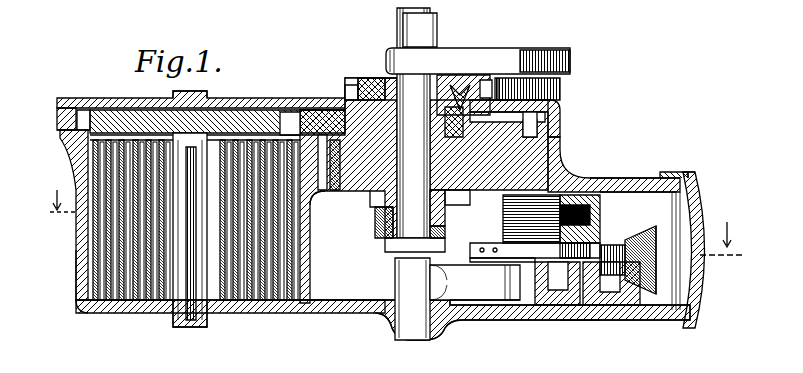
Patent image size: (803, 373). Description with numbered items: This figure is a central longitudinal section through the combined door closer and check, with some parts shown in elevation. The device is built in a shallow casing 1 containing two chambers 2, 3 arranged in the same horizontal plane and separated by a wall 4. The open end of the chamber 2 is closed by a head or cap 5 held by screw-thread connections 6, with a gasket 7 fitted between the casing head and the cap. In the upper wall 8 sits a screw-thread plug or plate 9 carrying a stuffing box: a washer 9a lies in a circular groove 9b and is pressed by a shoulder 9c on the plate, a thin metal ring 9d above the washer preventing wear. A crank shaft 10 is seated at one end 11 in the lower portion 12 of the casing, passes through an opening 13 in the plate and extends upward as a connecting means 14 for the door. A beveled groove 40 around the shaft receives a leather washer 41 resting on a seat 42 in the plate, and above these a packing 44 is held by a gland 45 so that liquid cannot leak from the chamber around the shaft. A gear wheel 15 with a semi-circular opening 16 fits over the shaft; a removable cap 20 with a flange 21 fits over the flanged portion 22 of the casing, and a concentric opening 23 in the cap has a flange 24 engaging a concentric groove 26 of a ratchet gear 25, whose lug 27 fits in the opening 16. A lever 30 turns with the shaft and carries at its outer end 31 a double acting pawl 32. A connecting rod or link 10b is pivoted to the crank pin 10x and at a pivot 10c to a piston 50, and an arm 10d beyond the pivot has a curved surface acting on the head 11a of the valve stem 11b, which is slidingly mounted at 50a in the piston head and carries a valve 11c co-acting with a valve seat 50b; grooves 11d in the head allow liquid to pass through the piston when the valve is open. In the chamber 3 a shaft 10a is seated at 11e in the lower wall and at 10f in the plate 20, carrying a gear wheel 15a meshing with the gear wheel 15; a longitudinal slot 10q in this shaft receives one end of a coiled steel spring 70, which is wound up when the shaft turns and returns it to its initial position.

The casing 1 is at (306, 312).
The chamber 2 is at (355, 330).
The chamber 3 is at (78, 280).
The wall 4 is at (305, 110).
The head or cap 5 is at (700, 193).
The screw-thread connections 6 is at (660, 174).
The gasket 7 is at (696, 175).
The upper wall 8 is at (554, 166).
The screw-thread plug or plate 9 is at (552, 152).
The washer 9a is at (599, 182).
The circular groove 9b is at (447, 190).
The shoulder 9c is at (345, 89).
The thin metal ring 9d is at (313, 112).
The crank shaft 10 is at (397, 328).
The shaft 10a is at (124, 314).
The connecting rod or link 10b is at (527, 305).
The pivot 10c is at (543, 303).
The arm 10d is at (586, 306).
The seat 10f is at (180, 93).
The longitudinal slot 10q is at (196, 303).
The crank pin 10x is at (448, 279).
The end of crank shaft 11 is at (430, 328).
The head 11a is at (627, 323).
The valve stem 11b is at (686, 297).
The valve 11c is at (640, 248).
The grooves 11d is at (583, 268).
The seat 11e is at (185, 168).
The lower portion of casing 12 is at (512, 312).
The opening 13 is at (395, 220).
The connecting means 14 is at (437, 28).
The gear wheel 15 is at (560, 118).
The gear wheel 15a is at (100, 112).
The semi-circular opening 16 is at (579, 346).
The removable cap 20 is at (263, 98).
The flange 21 is at (57, 110).
The flanged portion 22 is at (62, 133).
The concentric opening 23 is at (363, 62).
The flange 24 is at (368, 68).
The ratchet gear 25 is at (372, 78).
The concentric groove 26 is at (368, 88).
The lug 27 is at (410, 122).
The lever 30 is at (515, 58).
The outer end of lever 31 is at (560, 52).
The double acting pawl 32 is at (562, 88).
The beveled groove 40 is at (400, 210).
The leather washer 41 is at (380, 206).
The seat 42 is at (410, 232).
The packing 44 is at (322, 200).
The gland 45 is at (455, 78).
The piston 50 is at (702, 180).
The sliding mount 50a is at (642, 176).
The valve seat 50b is at (655, 230).
The coiled steel spring 70 is at (78, 260).